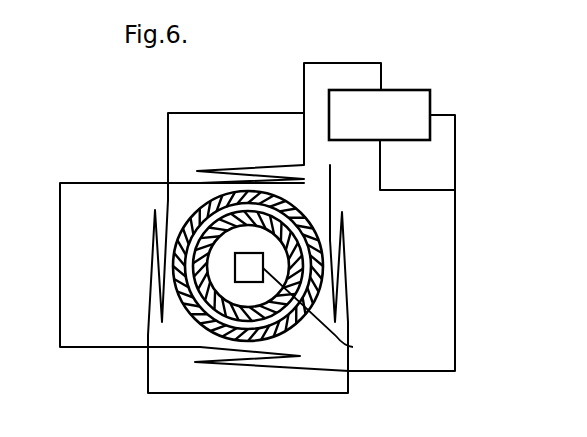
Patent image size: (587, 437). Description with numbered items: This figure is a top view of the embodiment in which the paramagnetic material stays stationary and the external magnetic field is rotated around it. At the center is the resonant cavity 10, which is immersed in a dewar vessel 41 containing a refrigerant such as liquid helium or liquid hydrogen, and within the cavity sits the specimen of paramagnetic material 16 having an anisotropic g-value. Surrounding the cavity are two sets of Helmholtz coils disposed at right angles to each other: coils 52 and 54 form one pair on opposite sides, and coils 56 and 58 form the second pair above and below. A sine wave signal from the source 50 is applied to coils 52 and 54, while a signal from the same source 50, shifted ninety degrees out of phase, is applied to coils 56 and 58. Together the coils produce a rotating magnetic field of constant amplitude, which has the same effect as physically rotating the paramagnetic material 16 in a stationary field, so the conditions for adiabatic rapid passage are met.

The resonant cavity 10 is at (292, 210).
The specimen of paramagnetic material 16 is at (260, 253).
The dewar vessel 41 is at (212, 208).
The source 50 is at (412, 90).
The Helmholtz coil 52 is at (150, 265).
The Helmholtz coil 54 is at (347, 275).
The Helmholtz coil 56 is at (232, 168).
The Helmholtz coil 58 is at (227, 366).